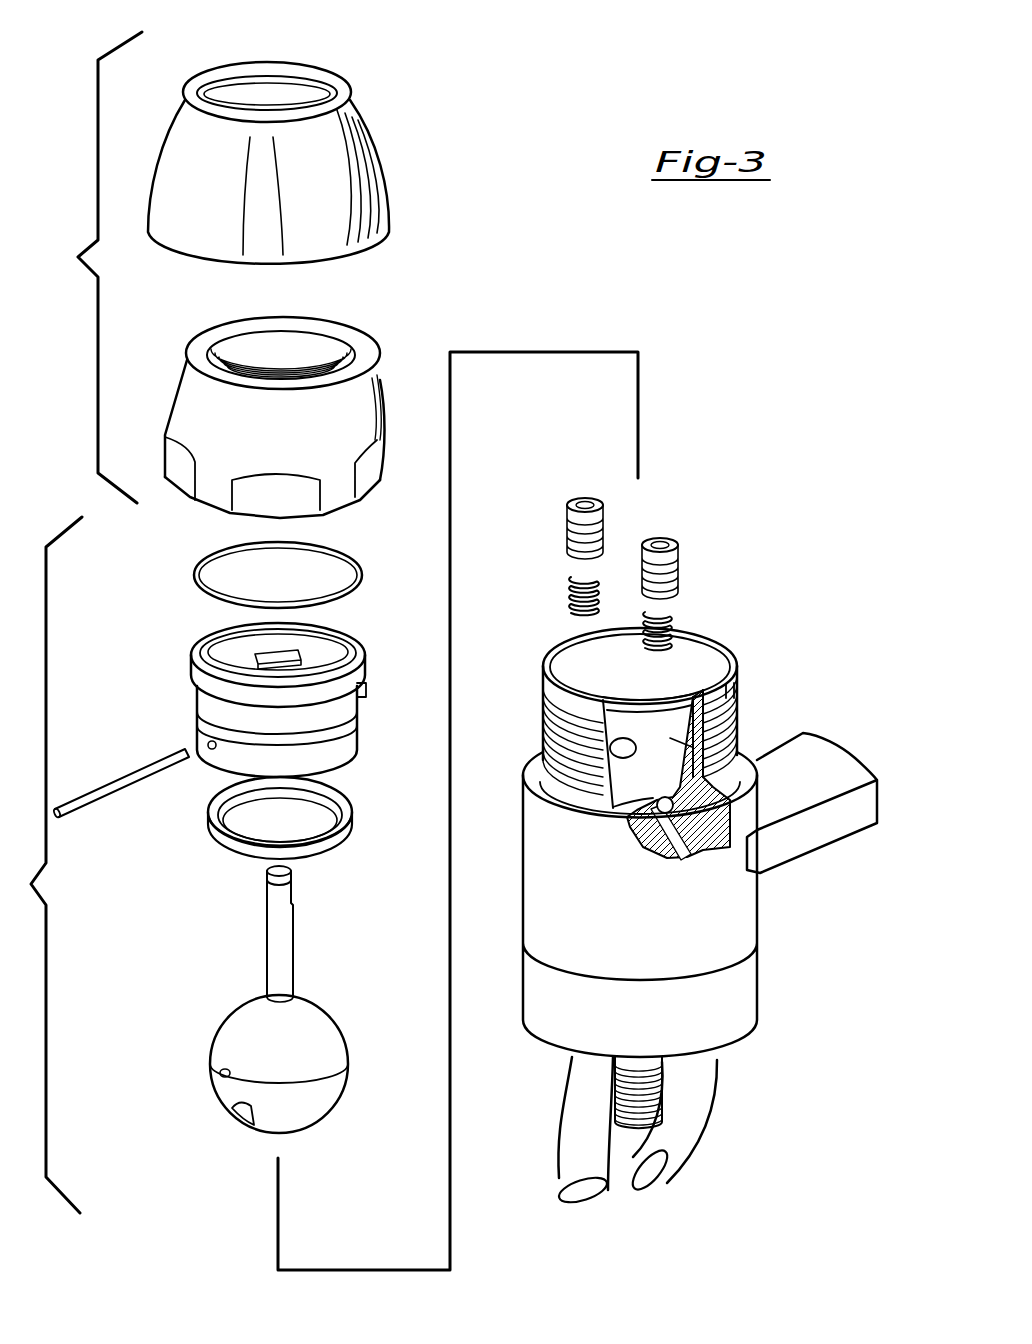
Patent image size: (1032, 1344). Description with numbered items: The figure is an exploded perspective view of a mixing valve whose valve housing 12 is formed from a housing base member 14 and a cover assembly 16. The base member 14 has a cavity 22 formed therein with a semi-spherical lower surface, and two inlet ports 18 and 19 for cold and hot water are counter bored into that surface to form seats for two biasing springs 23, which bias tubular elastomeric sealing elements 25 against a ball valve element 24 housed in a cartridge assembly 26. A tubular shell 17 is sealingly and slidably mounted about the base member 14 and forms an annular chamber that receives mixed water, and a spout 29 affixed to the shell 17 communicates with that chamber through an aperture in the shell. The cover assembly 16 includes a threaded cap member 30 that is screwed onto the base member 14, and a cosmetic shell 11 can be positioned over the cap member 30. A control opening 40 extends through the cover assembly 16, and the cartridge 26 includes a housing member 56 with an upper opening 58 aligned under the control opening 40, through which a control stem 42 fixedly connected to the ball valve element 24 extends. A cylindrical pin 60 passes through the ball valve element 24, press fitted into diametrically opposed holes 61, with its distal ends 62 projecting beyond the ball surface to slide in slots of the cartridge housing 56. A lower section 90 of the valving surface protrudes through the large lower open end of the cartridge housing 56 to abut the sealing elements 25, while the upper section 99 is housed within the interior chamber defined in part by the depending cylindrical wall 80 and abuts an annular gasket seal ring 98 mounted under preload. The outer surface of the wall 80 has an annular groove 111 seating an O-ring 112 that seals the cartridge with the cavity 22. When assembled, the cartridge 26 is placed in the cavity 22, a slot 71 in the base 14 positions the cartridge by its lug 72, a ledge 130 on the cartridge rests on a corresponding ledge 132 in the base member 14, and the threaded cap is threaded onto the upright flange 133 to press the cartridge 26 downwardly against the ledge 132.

The cosmetic shell 11 is at (373, 175).
The valve housing 12 is at (522, 712).
The housing base member 14 is at (678, 873).
The cover assembly 16 is at (78, 255).
The tubular shell 17 is at (727, 933).
The inlet port 18 is at (627, 815).
The inlet port 19 is at (625, 742).
The cavity 22 is at (823, 772).
The biasing spring 23 is at (655, 650).
The ball valve element 24 is at (271, 1026).
The tubular elastomeric sealing element 25 is at (660, 540).
The cartridge assembly 26 is at (34, 884).
The spout 29 is at (873, 803).
The threaded cap member 30 is at (190, 413).
The control opening 40 is at (253, 90).
The control stem 42 is at (277, 953).
The cartridge housing member 56 is at (350, 718).
The upper opening 58 is at (290, 652).
The cylindrical pin 60 is at (103, 797).
The holes 61 is at (220, 1073).
The pin distal ends 62 is at (192, 745).
The slot 71 is at (727, 690).
The lug 72 is at (366, 690).
The exterior wall 80 is at (320, 757).
The lower section 90 is at (310, 1120).
The annular gasket seal ring 98 is at (332, 845).
The upper section 99 is at (297, 1008).
The annular groove 111 is at (350, 733).
The O-ring 112 is at (205, 590).
The ledge 130 is at (264, 702).
The ledge 132 is at (587, 658).
The upright flange 133 is at (540, 738).